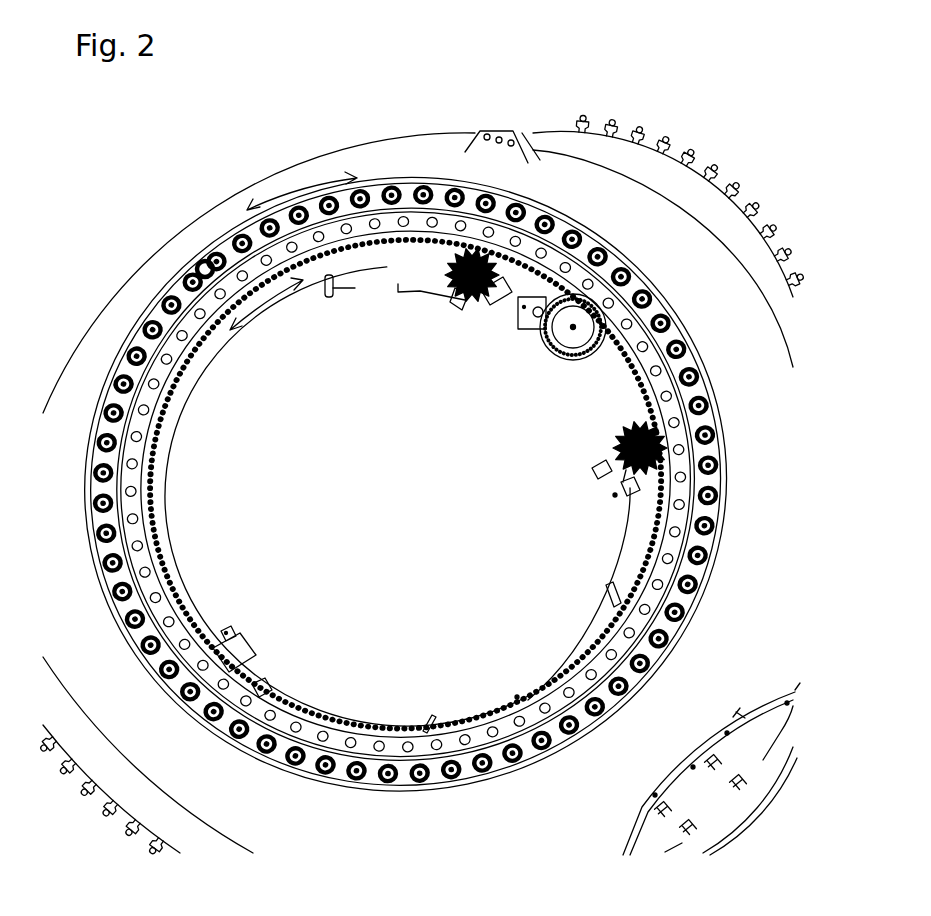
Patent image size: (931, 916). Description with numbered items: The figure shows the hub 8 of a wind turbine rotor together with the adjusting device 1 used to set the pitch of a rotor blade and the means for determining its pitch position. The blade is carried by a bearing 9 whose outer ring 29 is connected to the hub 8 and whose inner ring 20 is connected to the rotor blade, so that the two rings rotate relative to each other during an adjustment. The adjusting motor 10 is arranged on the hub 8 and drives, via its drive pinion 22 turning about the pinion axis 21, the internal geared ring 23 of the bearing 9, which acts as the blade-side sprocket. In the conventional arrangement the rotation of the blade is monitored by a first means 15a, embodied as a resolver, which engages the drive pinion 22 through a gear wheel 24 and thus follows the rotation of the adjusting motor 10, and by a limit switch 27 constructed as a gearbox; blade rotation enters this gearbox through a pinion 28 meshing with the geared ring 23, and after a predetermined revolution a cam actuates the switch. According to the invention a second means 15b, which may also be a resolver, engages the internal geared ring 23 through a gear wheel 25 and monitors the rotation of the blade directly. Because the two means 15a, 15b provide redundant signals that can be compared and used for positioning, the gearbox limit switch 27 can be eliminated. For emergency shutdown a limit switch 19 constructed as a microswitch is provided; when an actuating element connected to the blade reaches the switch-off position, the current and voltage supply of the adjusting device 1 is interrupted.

The adjusting device 1 is at (729, 387).
The hub 8 is at (765, 657).
The bearing 9 is at (543, 779).
The adjusting motor 10 is at (660, 304).
The first means for generating a signal 15a is at (520, 310).
The second means for generating a signal 15b is at (483, 300).
The limit switch 19 is at (267, 683).
The inner ring 20 is at (183, 363).
The gear wheel axis 21 is at (575, 325).
The drive pinion 22 is at (575, 342).
The internal geared ring 23 is at (147, 507).
The gear wheel 24 is at (543, 330).
The gear wheel 25 is at (477, 237).
The limit switch 27 is at (625, 497).
The pinion 28 is at (612, 437).
The outer ring 29 is at (203, 262).